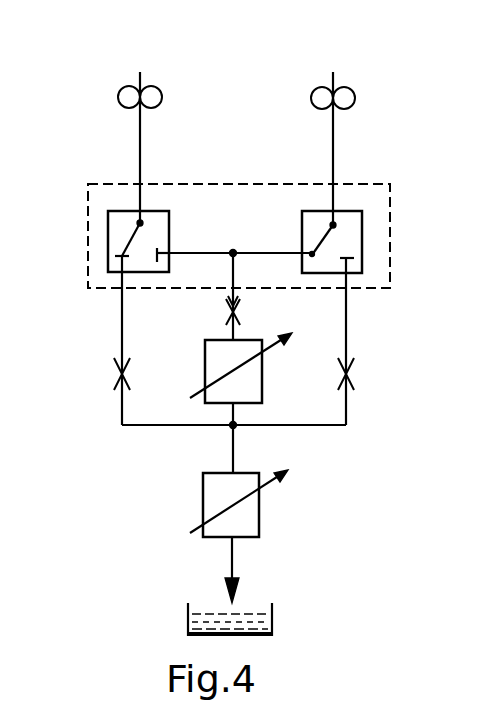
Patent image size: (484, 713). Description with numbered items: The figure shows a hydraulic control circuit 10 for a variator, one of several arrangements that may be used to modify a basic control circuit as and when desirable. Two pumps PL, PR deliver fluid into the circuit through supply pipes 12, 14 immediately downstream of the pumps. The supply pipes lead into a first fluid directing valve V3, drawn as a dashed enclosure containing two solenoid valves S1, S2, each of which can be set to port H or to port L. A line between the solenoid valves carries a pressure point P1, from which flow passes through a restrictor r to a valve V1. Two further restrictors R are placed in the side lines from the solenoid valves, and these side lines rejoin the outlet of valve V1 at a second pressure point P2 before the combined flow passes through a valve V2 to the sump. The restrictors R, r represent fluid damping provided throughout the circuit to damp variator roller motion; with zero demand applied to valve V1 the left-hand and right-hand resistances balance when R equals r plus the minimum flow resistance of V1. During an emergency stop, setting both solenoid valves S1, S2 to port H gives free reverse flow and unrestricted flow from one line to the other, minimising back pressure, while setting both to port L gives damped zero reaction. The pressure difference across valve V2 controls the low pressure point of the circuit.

The hydraulic control circuit 10 is at (96, 78).
The supply pipe 12 is at (140, 146).
The supply pipe 14 is at (333, 138).
The left-hand pump PL is at (144, 59).
The right-hand pump PR is at (340, 59).
The first fluid directing valve V3 is at (368, 185).
The solenoid valve S1 is at (169, 232).
The solenoid valve S2 is at (362, 247).
The pressure point P1 is at (233, 252).
The restrictor r is at (238, 316).
The valve V1 is at (262, 372).
The restrictor R is at (233, 340).
The pressure point P2 is at (231, 428).
The valve V2 is at (259, 507).